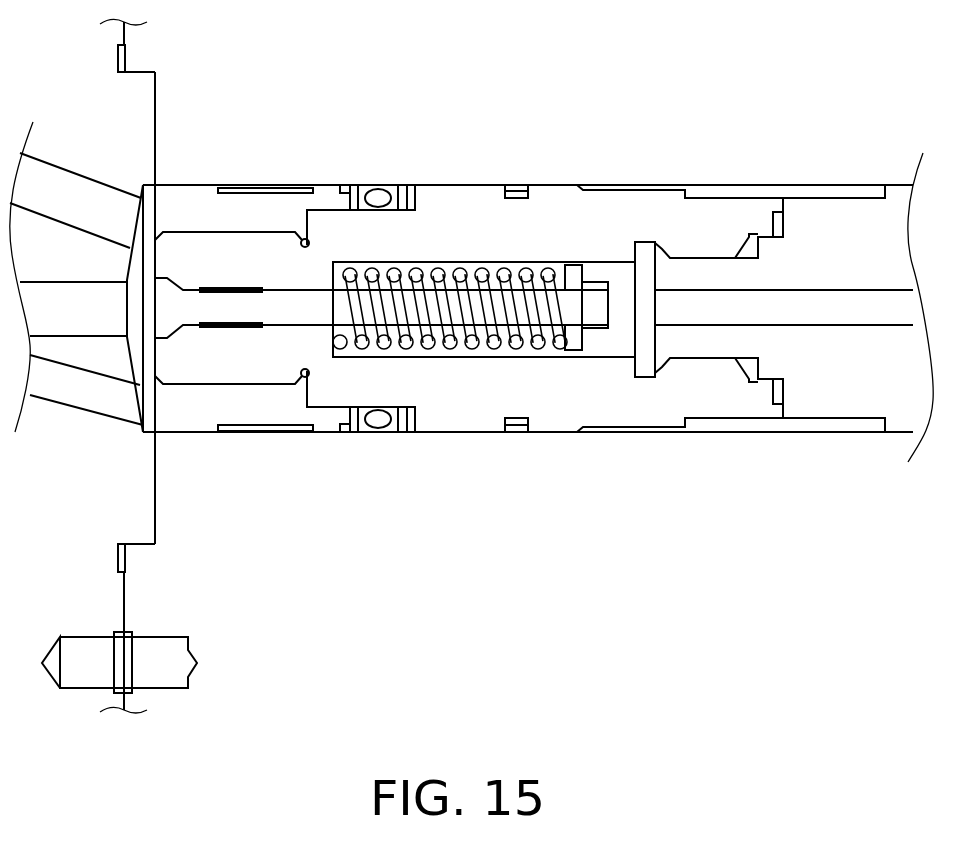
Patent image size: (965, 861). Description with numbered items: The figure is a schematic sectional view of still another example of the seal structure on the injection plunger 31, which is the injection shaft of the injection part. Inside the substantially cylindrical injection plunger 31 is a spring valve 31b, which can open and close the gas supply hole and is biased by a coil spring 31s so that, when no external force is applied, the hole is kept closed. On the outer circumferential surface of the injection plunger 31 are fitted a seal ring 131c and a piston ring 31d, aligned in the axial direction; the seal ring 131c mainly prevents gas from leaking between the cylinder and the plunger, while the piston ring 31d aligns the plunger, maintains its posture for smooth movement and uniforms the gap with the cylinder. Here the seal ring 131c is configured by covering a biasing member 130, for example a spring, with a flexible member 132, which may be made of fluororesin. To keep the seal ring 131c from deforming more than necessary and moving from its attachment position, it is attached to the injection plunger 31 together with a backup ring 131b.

The injection plunger 31 is at (556, 179).
The spring valve 31b is at (230, 308).
The coil spring 31s is at (472, 347).
The piston ring 31d is at (517, 432).
The biasing member 130 is at (353, 432).
The flexible member 132 is at (393, 432).
The seal ring 131c is at (342, 391).
The backup ring 131b is at (348, 433).